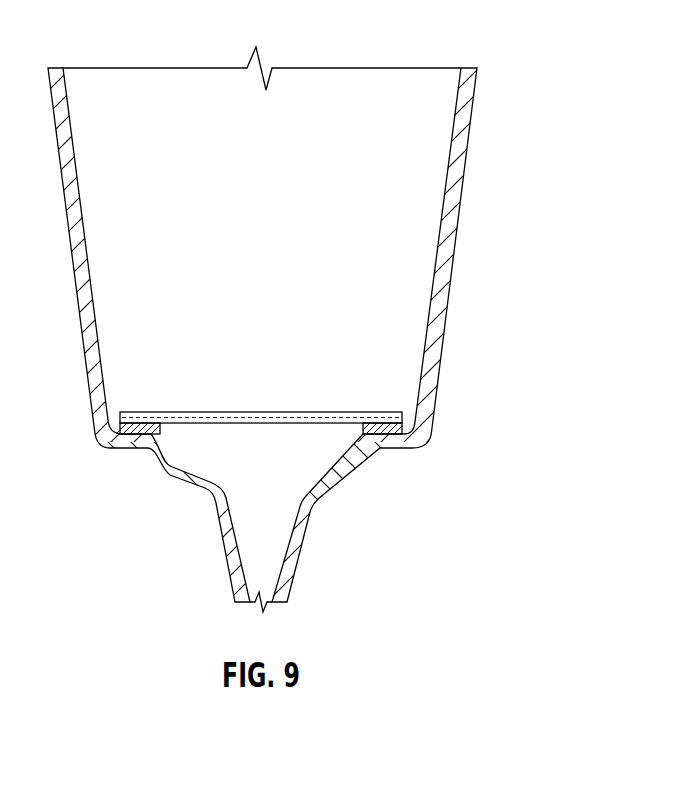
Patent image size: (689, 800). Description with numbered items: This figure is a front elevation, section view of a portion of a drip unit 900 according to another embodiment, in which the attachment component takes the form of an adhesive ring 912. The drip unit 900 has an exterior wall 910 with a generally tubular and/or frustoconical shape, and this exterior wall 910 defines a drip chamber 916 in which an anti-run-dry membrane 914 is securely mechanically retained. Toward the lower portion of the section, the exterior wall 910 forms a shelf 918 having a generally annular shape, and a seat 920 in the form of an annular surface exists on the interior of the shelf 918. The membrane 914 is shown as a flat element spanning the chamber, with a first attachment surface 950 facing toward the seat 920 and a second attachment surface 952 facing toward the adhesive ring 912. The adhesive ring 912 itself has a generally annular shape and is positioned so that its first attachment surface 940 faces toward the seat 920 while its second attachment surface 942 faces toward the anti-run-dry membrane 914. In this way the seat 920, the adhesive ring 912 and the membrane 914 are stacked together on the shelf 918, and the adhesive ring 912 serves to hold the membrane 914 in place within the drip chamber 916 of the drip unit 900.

The drip unit 900 is at (493, 25).
The exterior wall 910 is at (466, 267).
The adhesive ring 912 is at (172, 433).
The anti-run-dry membrane 914 is at (305, 462).
The drip chamber 916 is at (294, 224).
The shelf 918 is at (377, 497).
The seat 920 is at (145, 428).
The first attachment surface 940 is at (120, 442).
The second attachment surface 942 is at (140, 422).
The first attachment surface 950 is at (389, 438).
The second attachment surface 952 is at (320, 412).